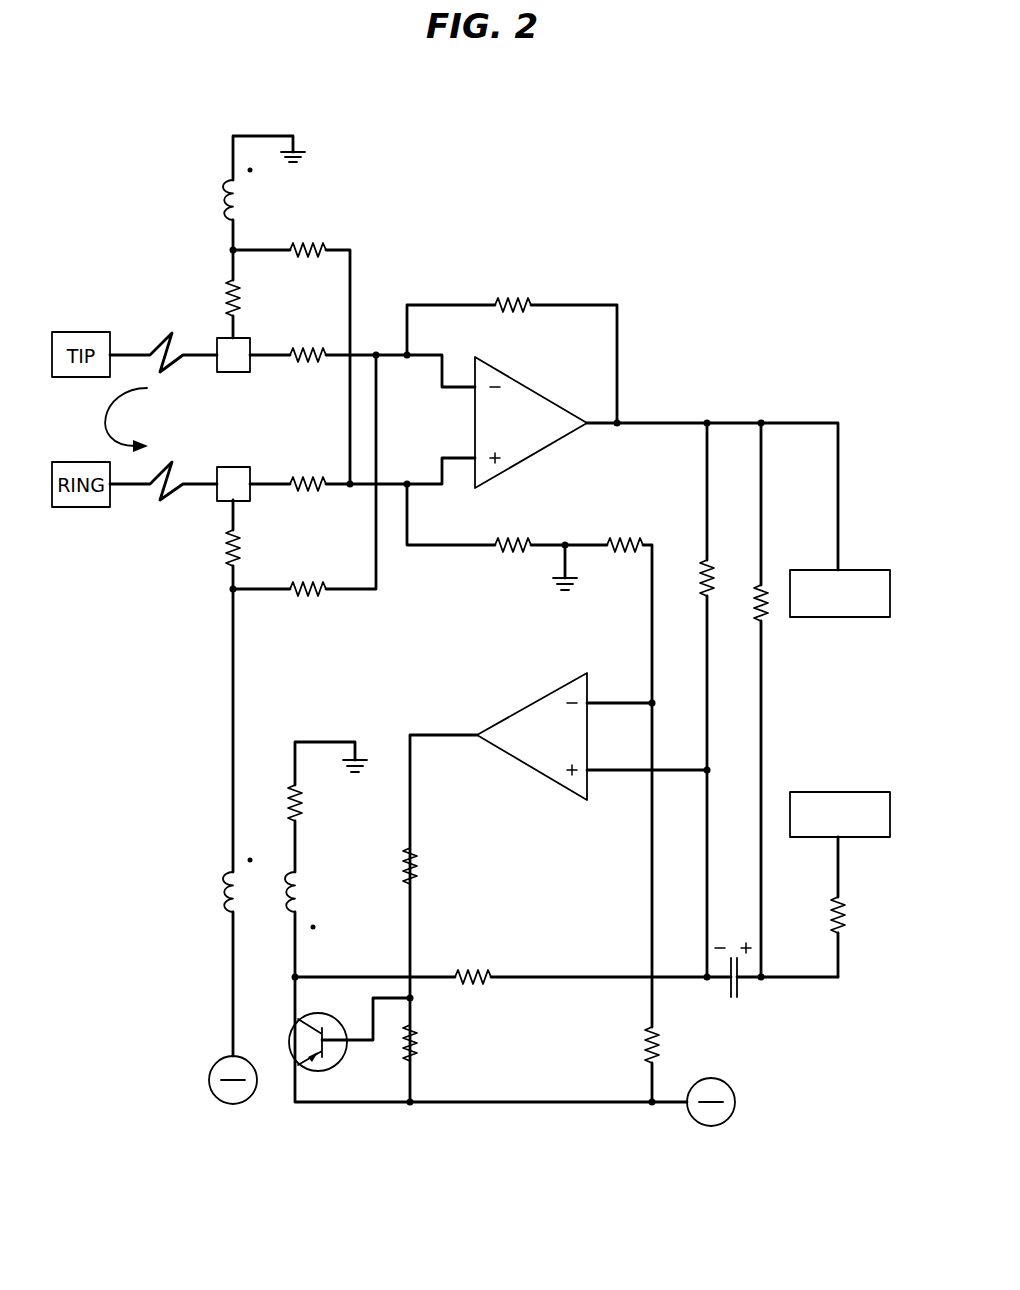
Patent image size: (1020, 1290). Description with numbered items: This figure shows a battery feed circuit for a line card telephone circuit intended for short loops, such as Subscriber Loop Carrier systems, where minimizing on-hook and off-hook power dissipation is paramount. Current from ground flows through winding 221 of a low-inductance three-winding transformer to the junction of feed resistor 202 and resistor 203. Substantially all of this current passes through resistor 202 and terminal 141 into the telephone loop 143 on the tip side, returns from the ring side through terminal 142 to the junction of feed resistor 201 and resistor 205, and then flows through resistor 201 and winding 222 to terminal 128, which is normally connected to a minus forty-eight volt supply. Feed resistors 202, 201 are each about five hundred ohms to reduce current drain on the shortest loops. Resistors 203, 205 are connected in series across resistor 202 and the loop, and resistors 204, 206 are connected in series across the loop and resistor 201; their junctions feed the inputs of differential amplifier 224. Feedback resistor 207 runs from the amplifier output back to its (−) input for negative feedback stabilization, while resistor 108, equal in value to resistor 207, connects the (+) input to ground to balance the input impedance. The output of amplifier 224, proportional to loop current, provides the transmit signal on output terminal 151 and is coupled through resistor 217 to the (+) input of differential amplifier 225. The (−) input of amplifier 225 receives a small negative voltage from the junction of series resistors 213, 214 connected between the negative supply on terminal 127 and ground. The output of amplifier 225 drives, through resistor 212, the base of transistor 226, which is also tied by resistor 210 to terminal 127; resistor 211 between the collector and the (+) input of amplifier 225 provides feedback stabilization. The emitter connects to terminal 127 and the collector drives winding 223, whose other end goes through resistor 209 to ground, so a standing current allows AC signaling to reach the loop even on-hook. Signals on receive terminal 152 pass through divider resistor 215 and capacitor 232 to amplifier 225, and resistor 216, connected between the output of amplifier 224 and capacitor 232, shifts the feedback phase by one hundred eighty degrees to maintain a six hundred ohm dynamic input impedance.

The winding 221 is at (222, 198).
The feed resistor 202 is at (226, 298).
The resistor 203 is at (308, 245).
The resistor 204 is at (305, 350).
The terminal 141 is at (240, 372).
The telephone loop 143 is at (95, 413).
The terminal 142 is at (237, 466).
The resistor 205 is at (315, 492).
The feed resistor 201 is at (225, 547).
The resistor 206 is at (315, 598).
The feedback resistor 207 is at (515, 295).
The differential amplifier 224 is at (535, 380).
The resistor 108 is at (507, 555).
The resistor 214 is at (622, 562).
The resistor 217 is at (705, 565).
The resistor 216 is at (758, 585).
The output terminal 151 is at (838, 618).
The receive terminal 152 is at (840, 792).
The differential amplifier 225 is at (530, 703).
The resistor 212 is at (425, 868).
The resistor 209 is at (302, 800).
The winding 223 is at (307, 888).
The winding 222 is at (220, 892).
The transistor 226 is at (292, 1025).
The resistor 211 is at (468, 965).
The resistor 210 is at (425, 1043).
The resistor 213 is at (645, 1043).
The capacitor 232 is at (740, 998).
The resistor 215 is at (856, 912).
The terminal 128 is at (209, 1080).
The terminal 127 is at (728, 1122).